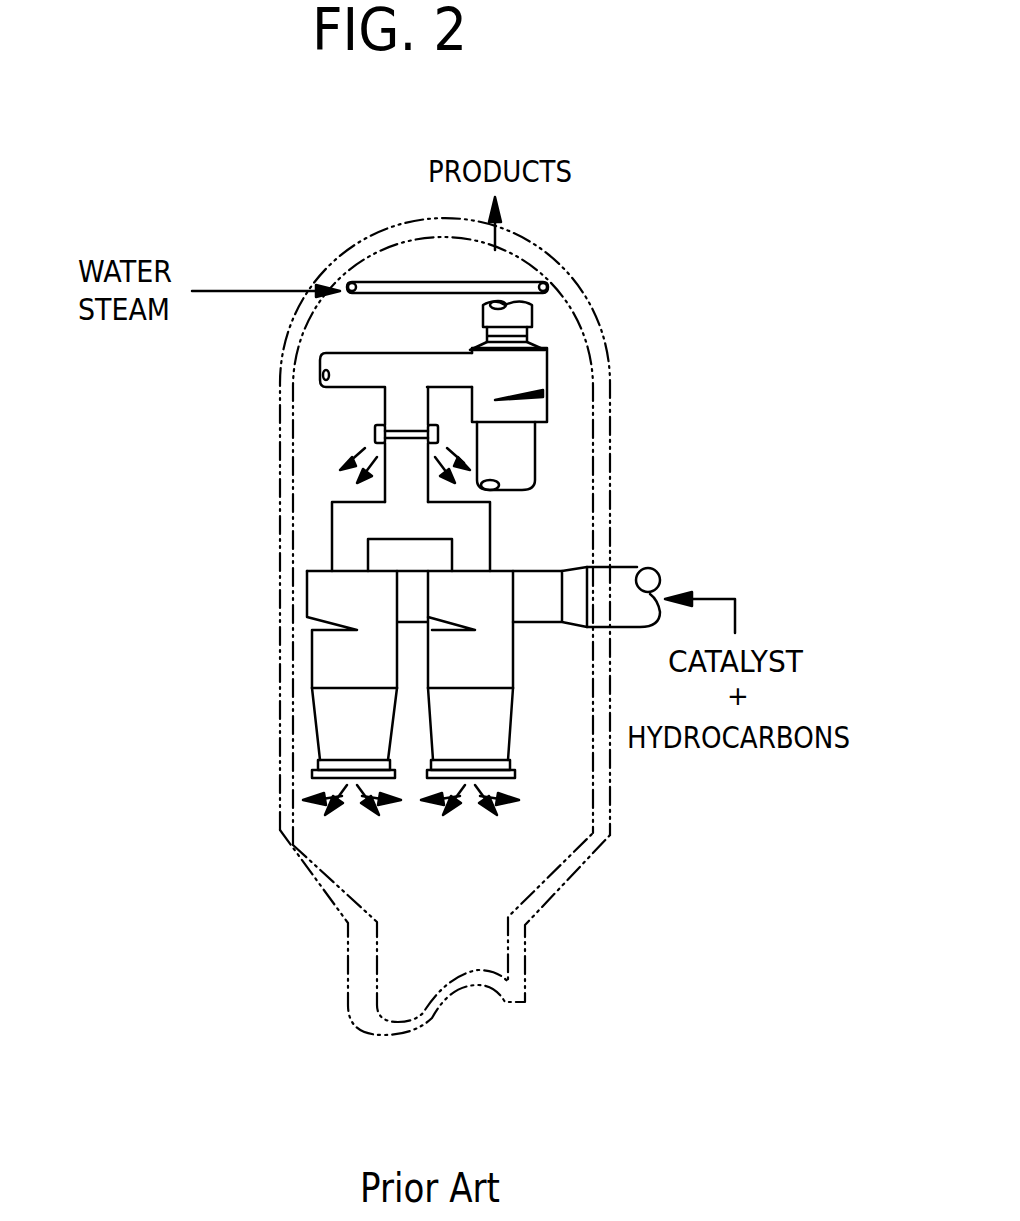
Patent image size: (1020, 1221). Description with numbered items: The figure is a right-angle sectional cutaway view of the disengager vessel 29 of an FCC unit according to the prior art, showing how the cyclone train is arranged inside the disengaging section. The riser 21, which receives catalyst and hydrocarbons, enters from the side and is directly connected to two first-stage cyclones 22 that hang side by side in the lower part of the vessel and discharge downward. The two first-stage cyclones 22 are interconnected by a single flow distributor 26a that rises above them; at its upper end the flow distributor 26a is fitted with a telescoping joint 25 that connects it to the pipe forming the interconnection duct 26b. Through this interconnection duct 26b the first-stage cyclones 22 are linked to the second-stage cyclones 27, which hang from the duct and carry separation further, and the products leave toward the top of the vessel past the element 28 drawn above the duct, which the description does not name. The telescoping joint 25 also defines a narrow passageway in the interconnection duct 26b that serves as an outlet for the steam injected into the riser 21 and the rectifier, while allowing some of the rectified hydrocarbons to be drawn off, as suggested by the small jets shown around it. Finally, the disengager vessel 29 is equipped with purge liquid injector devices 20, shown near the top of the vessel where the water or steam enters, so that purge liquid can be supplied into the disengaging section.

The purge liquid injector devices 20 is at (550, 291).
The riser 21 is at (603, 578).
The first-stage cyclones 22 is at (338, 705).
The telescoping joint 25 is at (375, 440).
The flow distributor 26a is at (345, 533).
The interconnection duct 26b is at (383, 405).
The second-stage cyclones 27 is at (540, 393).
The products outlet nozzle 28 is at (483, 330).
The disengager vessel 29 is at (573, 872).